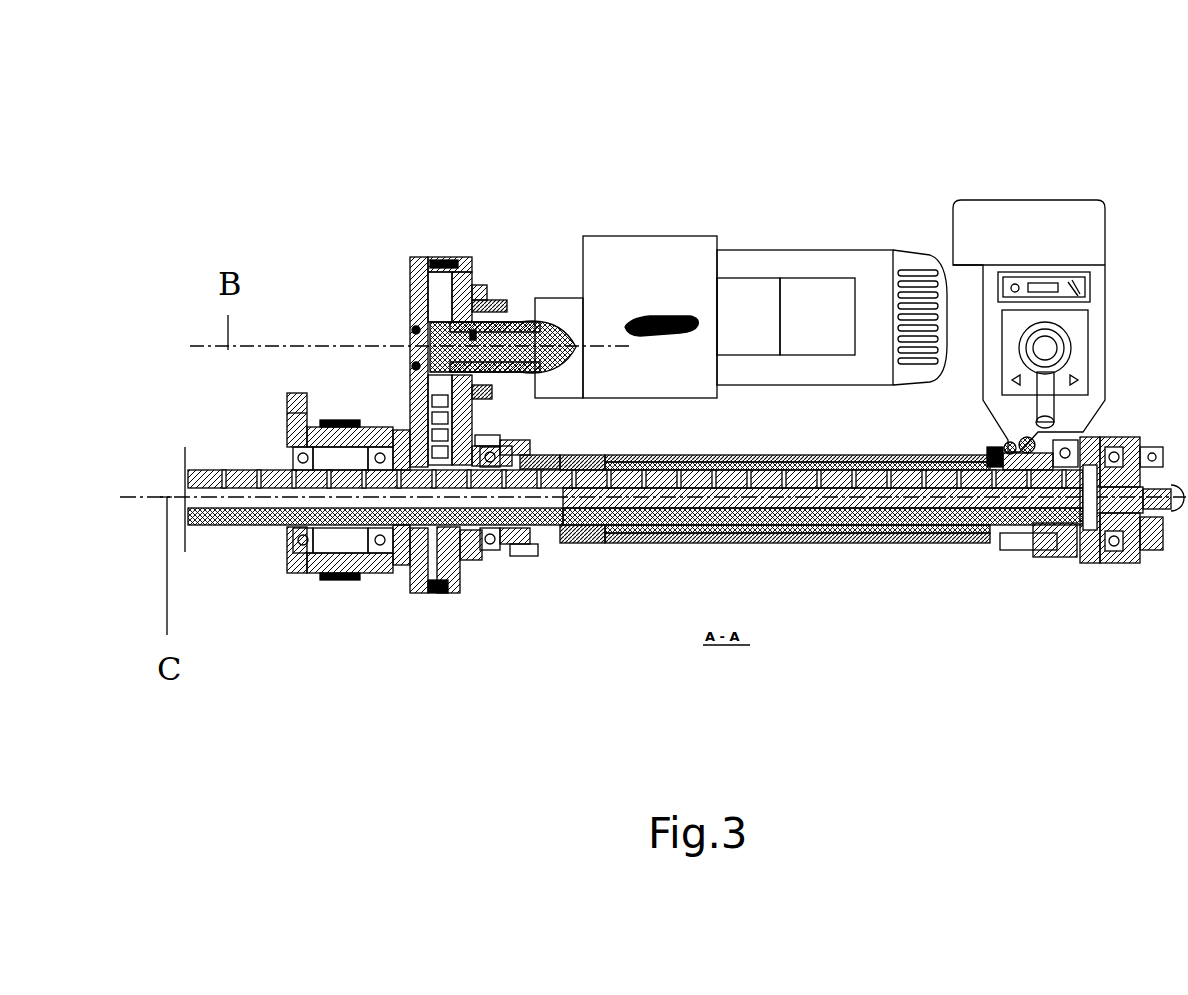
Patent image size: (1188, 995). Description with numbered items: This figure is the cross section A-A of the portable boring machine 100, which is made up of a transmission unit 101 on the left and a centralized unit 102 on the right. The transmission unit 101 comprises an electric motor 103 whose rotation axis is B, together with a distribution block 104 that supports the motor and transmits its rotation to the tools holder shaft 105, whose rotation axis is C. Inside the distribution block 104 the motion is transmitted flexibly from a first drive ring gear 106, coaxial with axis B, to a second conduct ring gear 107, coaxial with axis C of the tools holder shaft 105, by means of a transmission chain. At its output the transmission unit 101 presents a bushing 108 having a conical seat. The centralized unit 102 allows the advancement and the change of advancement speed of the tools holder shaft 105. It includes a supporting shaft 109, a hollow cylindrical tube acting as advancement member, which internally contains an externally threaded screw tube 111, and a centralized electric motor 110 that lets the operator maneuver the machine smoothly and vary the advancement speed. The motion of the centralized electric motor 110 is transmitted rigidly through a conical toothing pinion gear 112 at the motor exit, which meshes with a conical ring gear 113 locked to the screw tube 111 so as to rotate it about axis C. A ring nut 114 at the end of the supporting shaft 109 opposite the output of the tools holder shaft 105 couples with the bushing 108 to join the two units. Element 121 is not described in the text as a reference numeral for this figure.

The portable boring machine 100 is at (213, 158).
The transmission unit 101 is at (528, 232).
The centralized unit 102 is at (1018, 188).
The electric motor 103 is at (642, 243).
The distribution block 104 is at (460, 252).
The tools holder shaft 105 is at (232, 530).
The first drive ring gear 106 is at (432, 312).
The second conduct ring gear 107 is at (455, 540).
The bushing 108 is at (493, 555).
The supporting shaft 109 is at (575, 466).
The centralized electric motor 110 is at (1075, 212).
The screw tube 111 is at (775, 462).
The conical toothing pinion gear 112 is at (997, 443).
The conical ring gear 113 is at (1052, 578).
The ring nut 114 is at (512, 556).
The feed shaft 121 is at (910, 543).